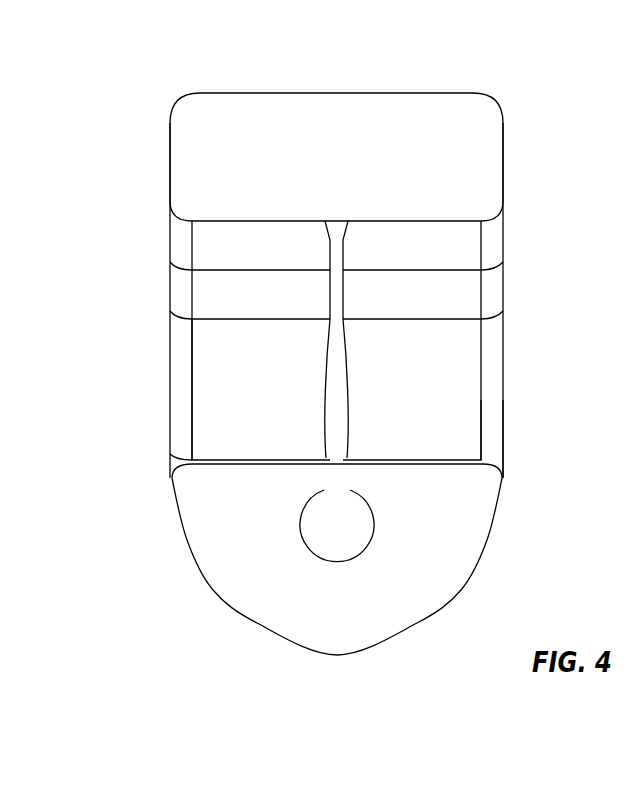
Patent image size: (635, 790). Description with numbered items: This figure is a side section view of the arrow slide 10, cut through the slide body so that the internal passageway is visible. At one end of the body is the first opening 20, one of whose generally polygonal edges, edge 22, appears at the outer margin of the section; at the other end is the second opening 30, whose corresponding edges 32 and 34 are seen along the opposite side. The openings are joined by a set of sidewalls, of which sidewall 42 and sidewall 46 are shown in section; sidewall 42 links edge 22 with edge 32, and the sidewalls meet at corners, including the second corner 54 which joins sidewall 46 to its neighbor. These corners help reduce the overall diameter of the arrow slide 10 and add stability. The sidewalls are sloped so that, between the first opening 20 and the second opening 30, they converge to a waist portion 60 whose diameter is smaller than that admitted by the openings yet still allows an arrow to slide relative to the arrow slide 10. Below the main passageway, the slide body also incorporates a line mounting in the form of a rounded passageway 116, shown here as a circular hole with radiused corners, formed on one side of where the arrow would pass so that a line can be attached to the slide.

The arrow slide 10 is at (287, 630).
The first opening 20 is at (464, 349).
The edge 22 is at (487, 452).
The second opening 30 is at (221, 355).
The edge 32 is at (190, 452).
The edge 34 is at (193, 258).
The sidewall 42 is at (427, 452).
The sidewall 46 is at (470, 308).
The second corner 54 is at (453, 260).
The waist portion 60 is at (337, 226).
The passageway 116 is at (357, 555).